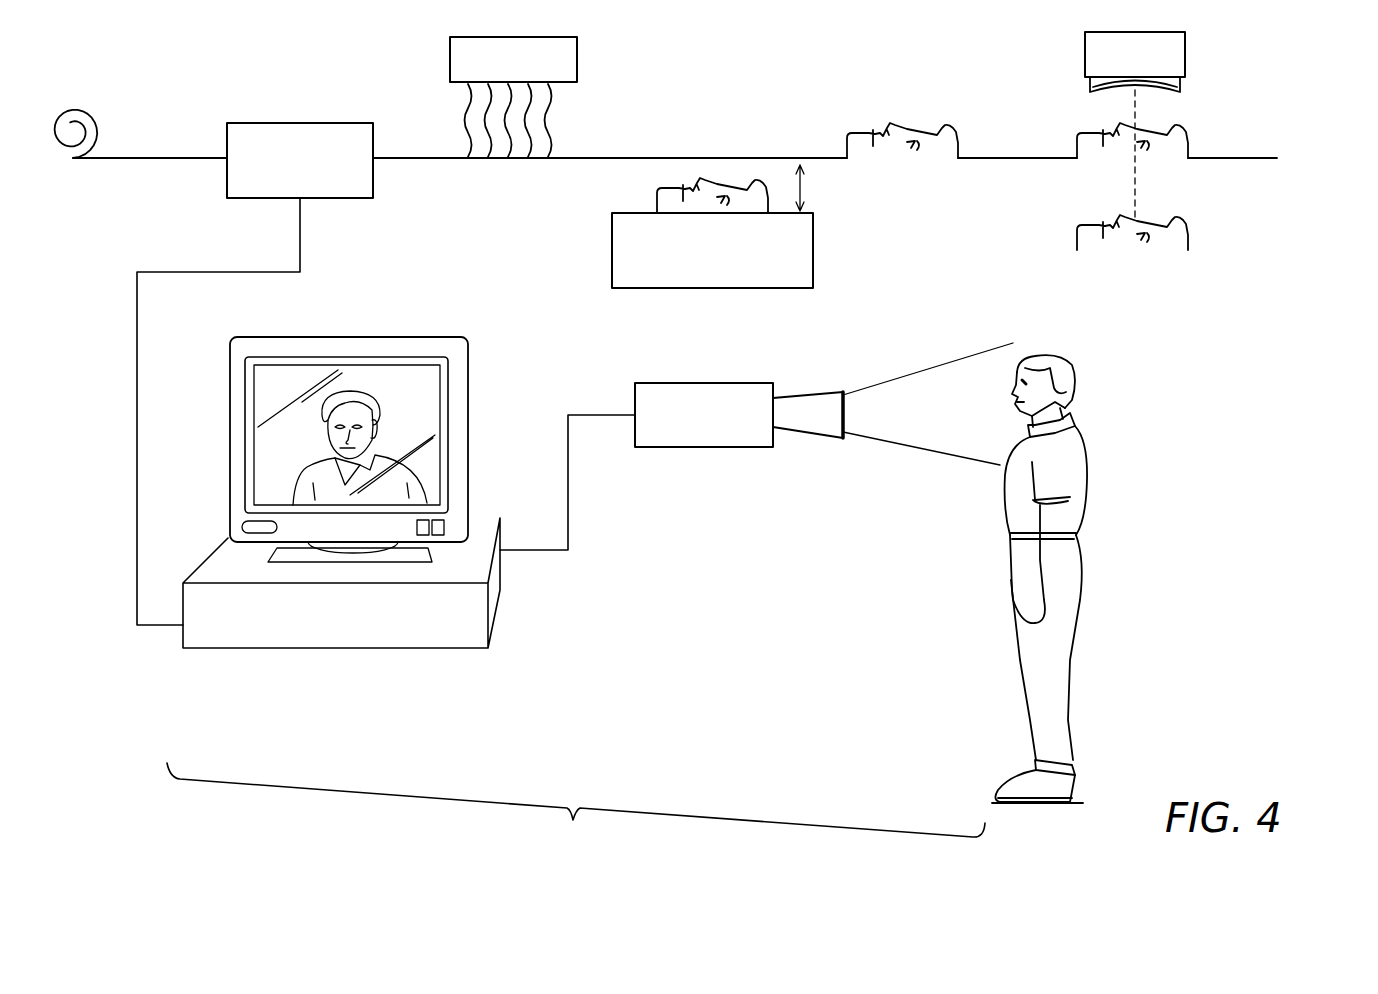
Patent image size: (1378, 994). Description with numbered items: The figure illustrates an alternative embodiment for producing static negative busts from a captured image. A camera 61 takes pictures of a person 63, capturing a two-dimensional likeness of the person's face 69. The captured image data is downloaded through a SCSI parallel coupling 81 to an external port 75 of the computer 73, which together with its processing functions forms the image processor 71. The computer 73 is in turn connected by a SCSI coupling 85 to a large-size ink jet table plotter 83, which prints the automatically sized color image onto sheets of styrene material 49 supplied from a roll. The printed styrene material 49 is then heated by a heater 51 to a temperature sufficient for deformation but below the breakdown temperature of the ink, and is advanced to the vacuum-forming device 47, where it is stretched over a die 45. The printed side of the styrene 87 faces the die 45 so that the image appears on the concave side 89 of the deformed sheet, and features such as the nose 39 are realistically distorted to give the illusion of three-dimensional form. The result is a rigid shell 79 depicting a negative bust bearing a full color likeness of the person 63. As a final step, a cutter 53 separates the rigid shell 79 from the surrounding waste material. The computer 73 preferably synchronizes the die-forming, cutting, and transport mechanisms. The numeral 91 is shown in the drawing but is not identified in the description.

The styrene material 49 is at (97, 117).
The ink jet table plotter 83 is at (300, 123).
The SCSI coupling 85 is at (137, 353).
The heater 51 is at (577, 55).
The die 45 is at (664, 180).
The nose 39 is at (700, 179).
The vacuum-forming device 47 is at (813, 262).
The cutter 53 is at (1085, 55).
The printed side of the styrene 87 is at (937, 162).
The formed face relief 91 is at (1120, 217).
The rigid shell 79 is at (1208, 248).
The concave side 89 is at (1106, 245).
The image processor 71 is at (295, 542).
The computer 73 is at (318, 646).
The external port 75 is at (503, 548).
The SCSI parallel coupling 81 is at (568, 515).
The camera 61 is at (708, 383).
The person's face 69 is at (1000, 408).
The person 63 is at (1087, 445).